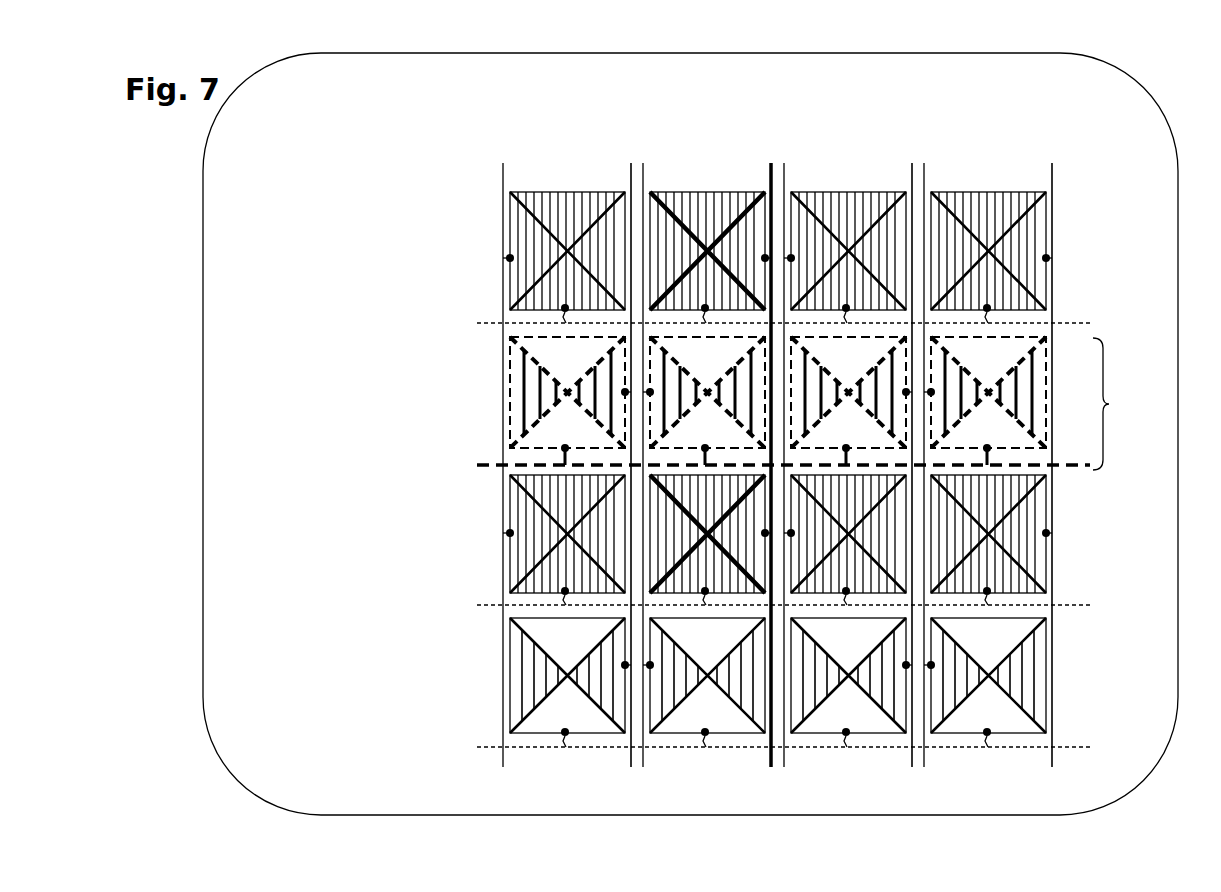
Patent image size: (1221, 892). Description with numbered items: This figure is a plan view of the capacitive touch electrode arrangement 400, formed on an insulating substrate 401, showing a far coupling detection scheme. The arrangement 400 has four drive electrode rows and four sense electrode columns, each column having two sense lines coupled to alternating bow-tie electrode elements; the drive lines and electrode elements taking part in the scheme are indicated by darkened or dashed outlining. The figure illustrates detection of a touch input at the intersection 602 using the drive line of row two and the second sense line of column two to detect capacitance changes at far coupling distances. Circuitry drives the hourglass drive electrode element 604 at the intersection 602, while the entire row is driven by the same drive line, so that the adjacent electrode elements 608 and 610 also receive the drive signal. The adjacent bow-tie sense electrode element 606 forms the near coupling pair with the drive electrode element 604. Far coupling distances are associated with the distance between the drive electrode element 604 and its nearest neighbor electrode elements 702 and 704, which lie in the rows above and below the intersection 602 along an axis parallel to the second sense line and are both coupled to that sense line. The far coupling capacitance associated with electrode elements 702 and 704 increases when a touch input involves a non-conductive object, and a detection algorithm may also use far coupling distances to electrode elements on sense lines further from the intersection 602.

The capacitive touch electrode arrangement 400 is at (318, 212).
The substrate 401 is at (690, 434).
The intersection 602 is at (670, 330).
The hourglass electrode element 604 is at (572, 356).
The bow-tie electrode element 606 is at (707, 392).
The adjacent electrode element 608 is at (567, 392).
The adjacent electrode element 610 is at (848, 392).
The nearest neighbor electrode element 702 is at (707, 251).
The nearest neighbor electrode element 704 is at (707, 534).